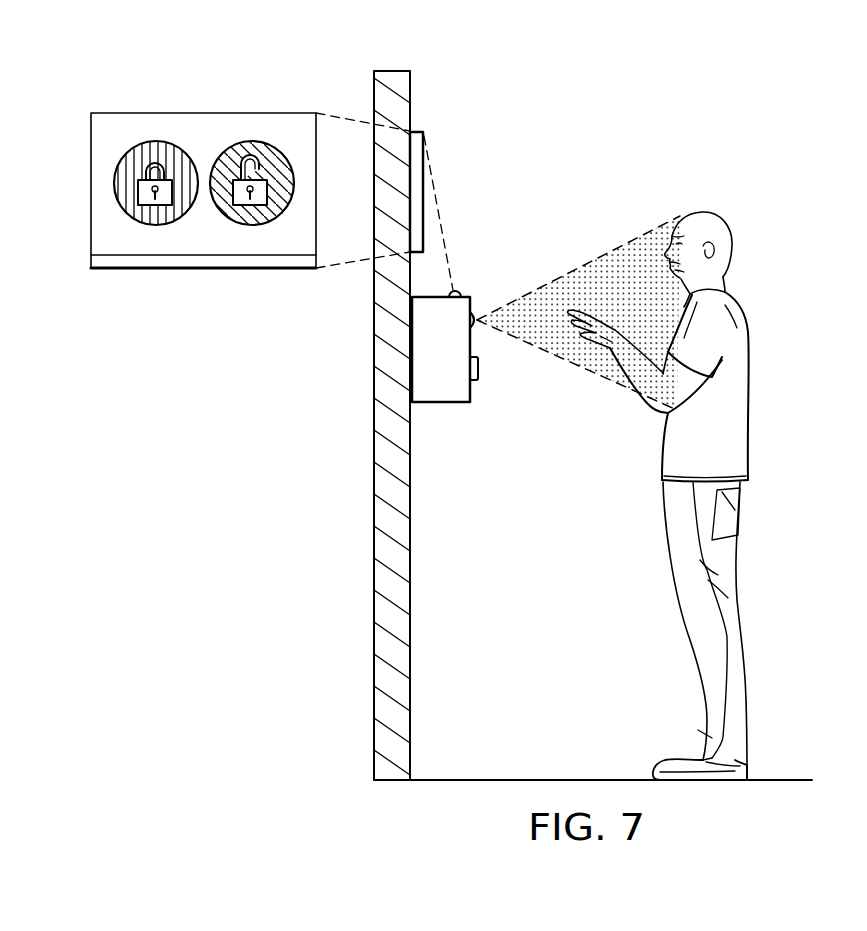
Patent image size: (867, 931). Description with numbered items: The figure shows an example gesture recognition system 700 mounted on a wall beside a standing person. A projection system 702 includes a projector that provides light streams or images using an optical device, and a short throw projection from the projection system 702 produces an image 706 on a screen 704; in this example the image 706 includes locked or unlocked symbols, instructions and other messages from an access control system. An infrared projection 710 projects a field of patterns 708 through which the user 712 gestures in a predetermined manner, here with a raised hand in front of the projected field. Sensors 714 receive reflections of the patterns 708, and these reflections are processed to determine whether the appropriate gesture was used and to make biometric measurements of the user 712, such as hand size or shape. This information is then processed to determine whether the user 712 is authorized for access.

The gesture recognition system 700 is at (637, 114).
The projection system 702 is at (441, 408).
The screen 704 is at (423, 193).
The image 706 is at (203, 113).
The patterns 708 is at (607, 385).
The infrared projection 710 is at (603, 262).
The user 712 is at (753, 376).
The sensors 714 is at (478, 368).